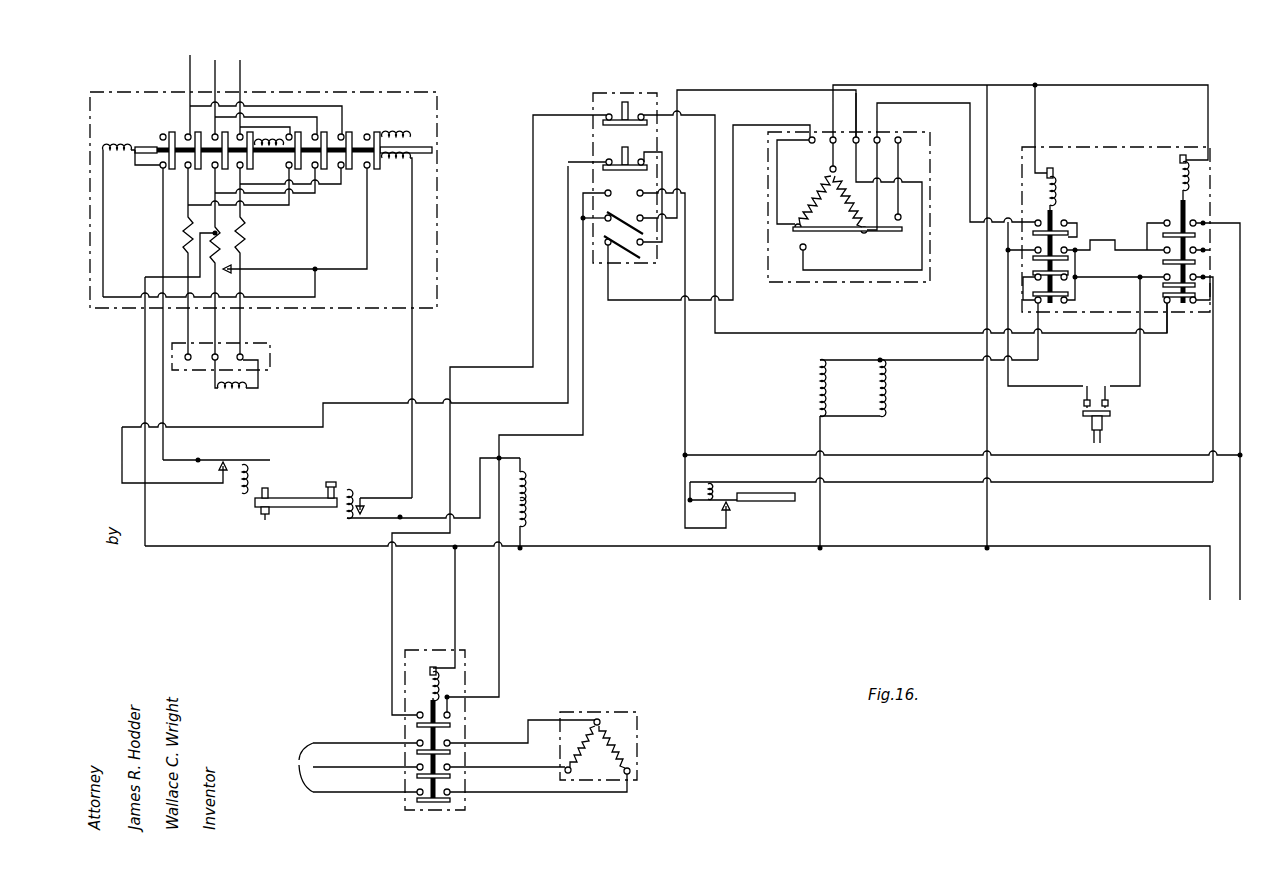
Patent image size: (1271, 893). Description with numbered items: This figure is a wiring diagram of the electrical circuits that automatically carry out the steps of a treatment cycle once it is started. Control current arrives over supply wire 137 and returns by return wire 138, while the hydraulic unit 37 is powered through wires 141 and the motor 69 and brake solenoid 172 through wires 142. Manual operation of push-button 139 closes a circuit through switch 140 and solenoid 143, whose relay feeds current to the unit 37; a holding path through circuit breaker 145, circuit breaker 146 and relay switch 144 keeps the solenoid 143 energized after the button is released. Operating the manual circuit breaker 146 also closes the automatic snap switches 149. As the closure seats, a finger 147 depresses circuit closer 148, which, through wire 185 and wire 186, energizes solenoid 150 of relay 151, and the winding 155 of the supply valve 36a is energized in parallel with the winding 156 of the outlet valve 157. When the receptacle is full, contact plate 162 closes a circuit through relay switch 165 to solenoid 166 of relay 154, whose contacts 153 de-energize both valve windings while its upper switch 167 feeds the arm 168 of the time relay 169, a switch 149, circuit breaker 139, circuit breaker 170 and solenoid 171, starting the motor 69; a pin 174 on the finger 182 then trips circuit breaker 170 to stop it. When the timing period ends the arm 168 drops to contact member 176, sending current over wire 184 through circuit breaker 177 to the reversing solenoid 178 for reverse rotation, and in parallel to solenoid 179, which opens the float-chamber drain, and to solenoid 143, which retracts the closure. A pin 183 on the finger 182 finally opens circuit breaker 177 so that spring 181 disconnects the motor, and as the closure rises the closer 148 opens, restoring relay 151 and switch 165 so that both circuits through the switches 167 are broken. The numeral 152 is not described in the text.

The solenoid valve 36a is at (818, 418).
The hydraulic unit 37 is at (637, 712).
The motor 69 is at (270, 345).
The supply wire 137 is at (1240, 522).
The return wire 138 is at (143, 395).
The push-button 139 is at (606, 158).
The switch 140 is at (641, 172).
The wires 141 is at (306, 762).
The wires 142 is at (240, 63).
The solenoid 143 is at (432, 680).
The relay switch 144 is at (452, 718).
The circuit breaker 145 is at (1213, 282).
The circuit breaker 146 is at (612, 122).
The finger 147 is at (770, 502).
The circuit closer 148 is at (730, 508).
The automatic snap switches 149 is at (638, 258).
The solenoid 150 is at (1178, 182).
The relay switch 151 is at (1190, 192).
The relay contacts 152 is at (1205, 250).
The contacts 153 is at (1033, 293).
The relay switch 154 is at (1058, 222).
The winding 155 is at (817, 386).
The winding 156 is at (886, 388).
The outlet valve 157 is at (885, 408).
The contact plate 162 is at (1110, 414).
The relay switch 165 is at (1192, 287).
The solenoid 166 is at (1056, 192).
The switches 167 is at (1078, 248).
The arm 168 is at (840, 233).
The time relay 169 is at (930, 242).
The circuit breaker 170 is at (268, 460).
The solenoid 171 is at (125, 142).
The solenoid 172 is at (236, 394).
The operating pin 174 is at (262, 522).
The contact member 176 is at (800, 250).
The circuit breaker 177 is at (361, 497).
The reversing solenoid 178 is at (406, 165).
The solenoid 179 is at (526, 478).
The spring 181 is at (392, 135).
The finger 182 is at (290, 500).
The pin 183 is at (349, 490).
The wire 184 is at (585, 392).
The wire 185 is at (1180, 440).
The wire 186 is at (987, 518).